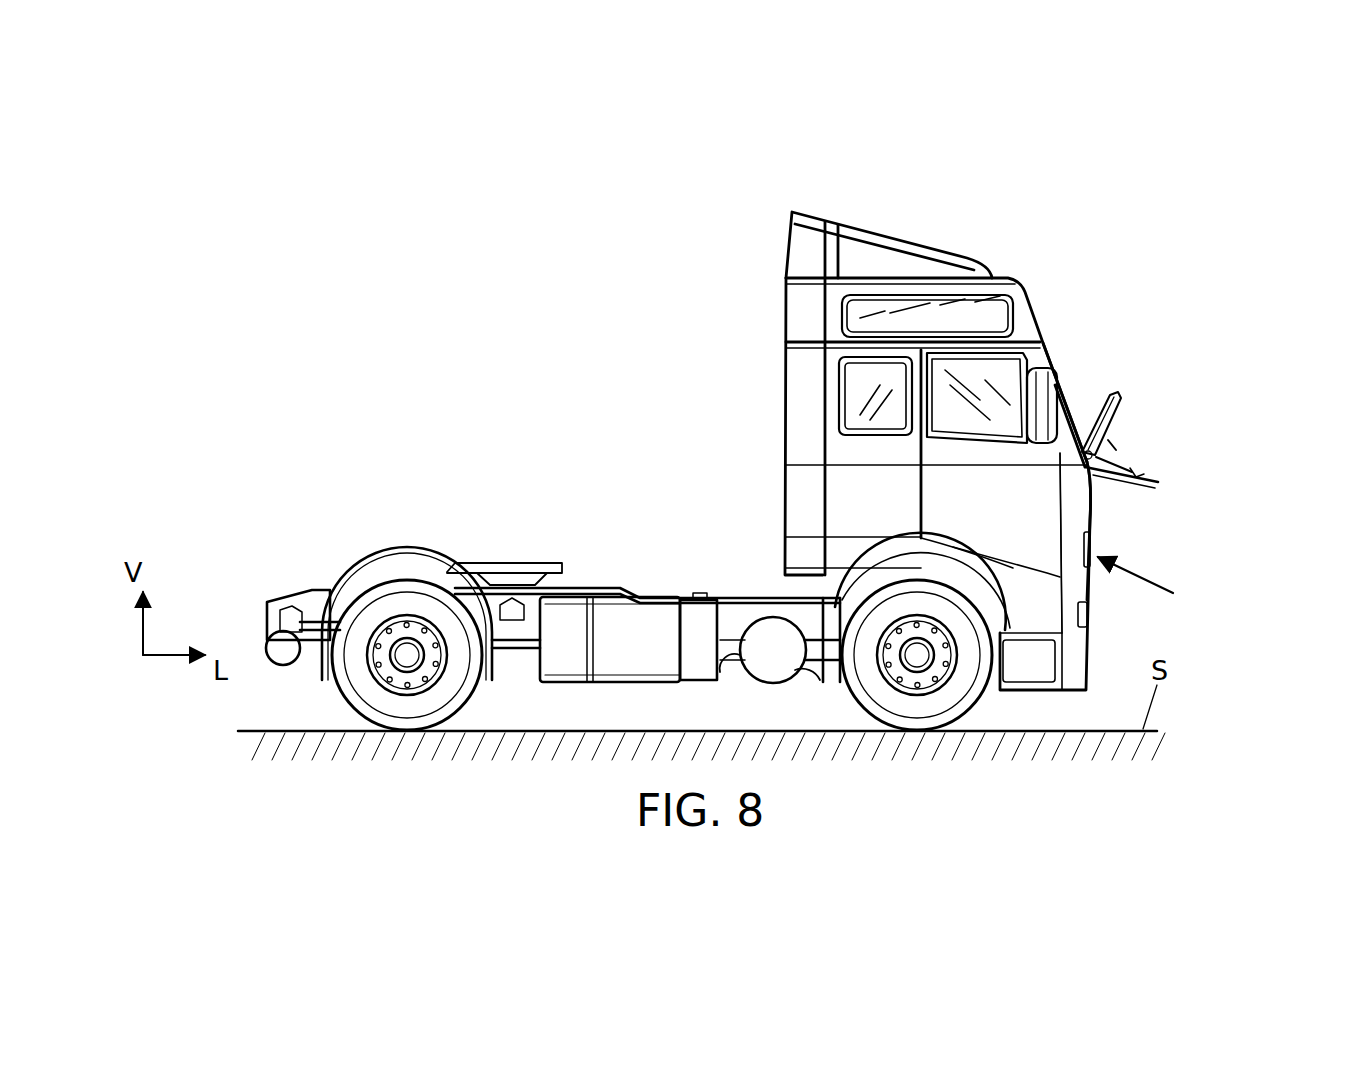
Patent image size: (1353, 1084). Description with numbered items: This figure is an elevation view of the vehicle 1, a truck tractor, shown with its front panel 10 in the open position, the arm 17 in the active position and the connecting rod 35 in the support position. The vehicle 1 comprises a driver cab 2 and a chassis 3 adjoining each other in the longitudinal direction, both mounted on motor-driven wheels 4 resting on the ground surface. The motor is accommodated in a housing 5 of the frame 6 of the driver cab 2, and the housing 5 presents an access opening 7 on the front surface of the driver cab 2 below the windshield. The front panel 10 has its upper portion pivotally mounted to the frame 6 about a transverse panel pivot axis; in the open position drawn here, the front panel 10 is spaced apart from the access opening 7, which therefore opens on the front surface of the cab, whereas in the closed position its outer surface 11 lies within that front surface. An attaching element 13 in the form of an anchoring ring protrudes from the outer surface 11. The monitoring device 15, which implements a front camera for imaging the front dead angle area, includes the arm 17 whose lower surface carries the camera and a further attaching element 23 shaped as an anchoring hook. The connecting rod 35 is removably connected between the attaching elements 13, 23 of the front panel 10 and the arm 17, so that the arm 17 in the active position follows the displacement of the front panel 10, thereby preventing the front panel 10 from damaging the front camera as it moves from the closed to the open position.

The vehicle 1 is at (632, 294).
The driver cab 2 is at (1010, 240).
The chassis 3 is at (478, 498).
The wheels 4 is at (364, 686).
The housing 5 is at (1036, 497).
The frame 6 is at (1062, 390).
The access opening 7 is at (1094, 494).
The front panel 10 is at (1168, 486).
The outer surface 11 is at (1152, 480).
The attaching element 13 is at (1140, 472).
The monitoring device 15 is at (1134, 380).
The arm 17 is at (1095, 410).
The attaching element 23 is at (1105, 440).
The connecting rod 35 is at (1113, 446).